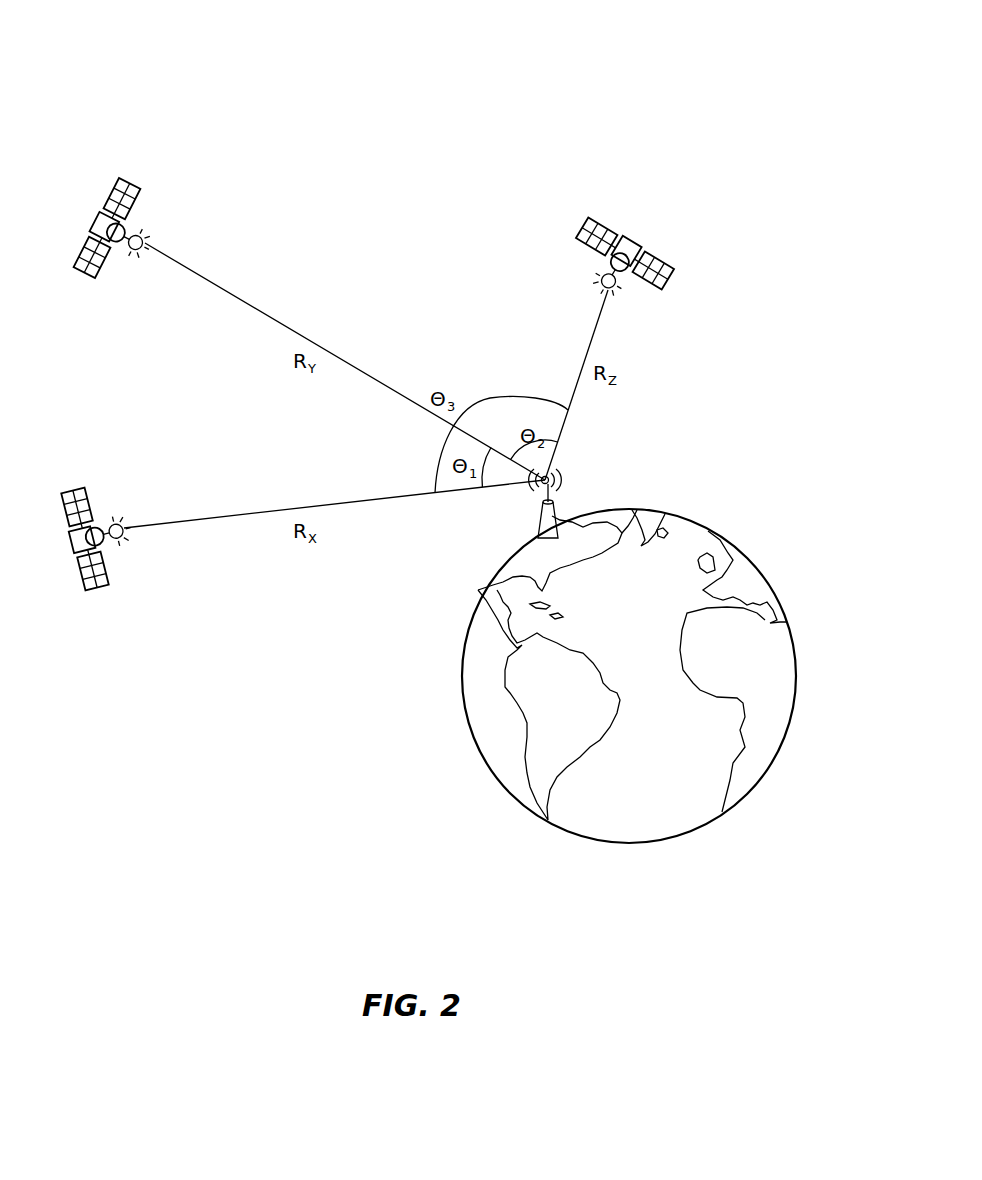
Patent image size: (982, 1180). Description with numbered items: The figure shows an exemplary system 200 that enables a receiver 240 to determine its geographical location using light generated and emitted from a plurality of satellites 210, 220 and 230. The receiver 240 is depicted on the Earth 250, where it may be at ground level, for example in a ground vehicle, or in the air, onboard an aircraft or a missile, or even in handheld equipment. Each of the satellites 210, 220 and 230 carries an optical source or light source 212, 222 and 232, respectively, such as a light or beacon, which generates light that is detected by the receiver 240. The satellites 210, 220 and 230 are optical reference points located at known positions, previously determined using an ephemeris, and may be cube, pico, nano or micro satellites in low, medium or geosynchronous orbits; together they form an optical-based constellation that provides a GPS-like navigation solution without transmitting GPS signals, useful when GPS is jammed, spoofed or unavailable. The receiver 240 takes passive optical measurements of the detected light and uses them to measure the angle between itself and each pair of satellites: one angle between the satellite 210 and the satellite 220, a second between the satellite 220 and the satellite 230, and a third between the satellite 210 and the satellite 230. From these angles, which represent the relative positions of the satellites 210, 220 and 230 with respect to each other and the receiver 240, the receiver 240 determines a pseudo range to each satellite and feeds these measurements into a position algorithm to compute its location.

The system 200 is at (196, 60).
The satellite 210 is at (72, 493).
The light source 212 is at (127, 540).
The satellite 220 is at (129, 185).
The light source 222 is at (145, 233).
The satellite 230 is at (638, 244).
The light source 232 is at (620, 293).
The receiver 240 is at (558, 508).
The Earth 250 is at (796, 624).